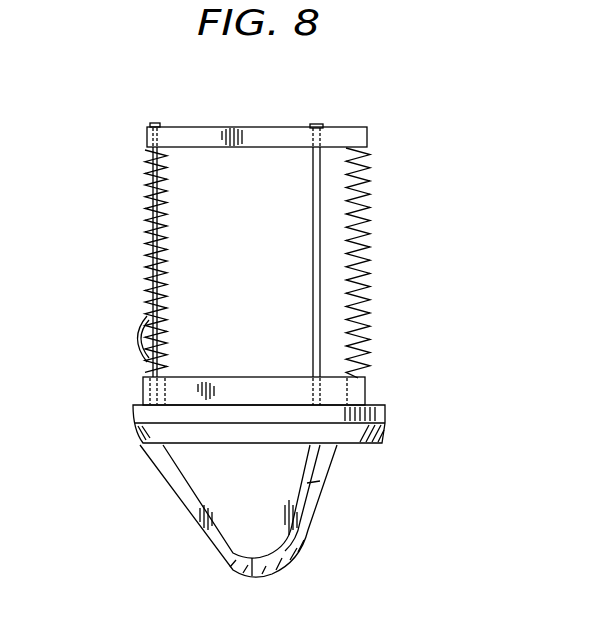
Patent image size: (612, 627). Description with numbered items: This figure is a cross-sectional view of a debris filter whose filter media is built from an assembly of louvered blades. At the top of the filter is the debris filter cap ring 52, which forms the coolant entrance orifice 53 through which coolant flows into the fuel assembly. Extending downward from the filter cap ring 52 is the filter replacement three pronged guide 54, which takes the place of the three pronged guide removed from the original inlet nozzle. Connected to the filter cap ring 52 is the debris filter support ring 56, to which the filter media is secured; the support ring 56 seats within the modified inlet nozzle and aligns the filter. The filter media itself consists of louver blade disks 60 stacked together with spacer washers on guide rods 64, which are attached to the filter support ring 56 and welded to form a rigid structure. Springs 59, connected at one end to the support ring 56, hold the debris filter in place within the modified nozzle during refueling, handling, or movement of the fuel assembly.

The debris filter cap ring 52 is at (385, 403).
The coolant entrance orifice 53 is at (210, 447).
The filter replacement three pronged guide 54 is at (210, 538).
The debris filter support ring 56 is at (190, 393).
The springs 59 is at (135, 340).
The louver blade disks 60 is at (365, 303).
The guide rods 64 is at (320, 213).